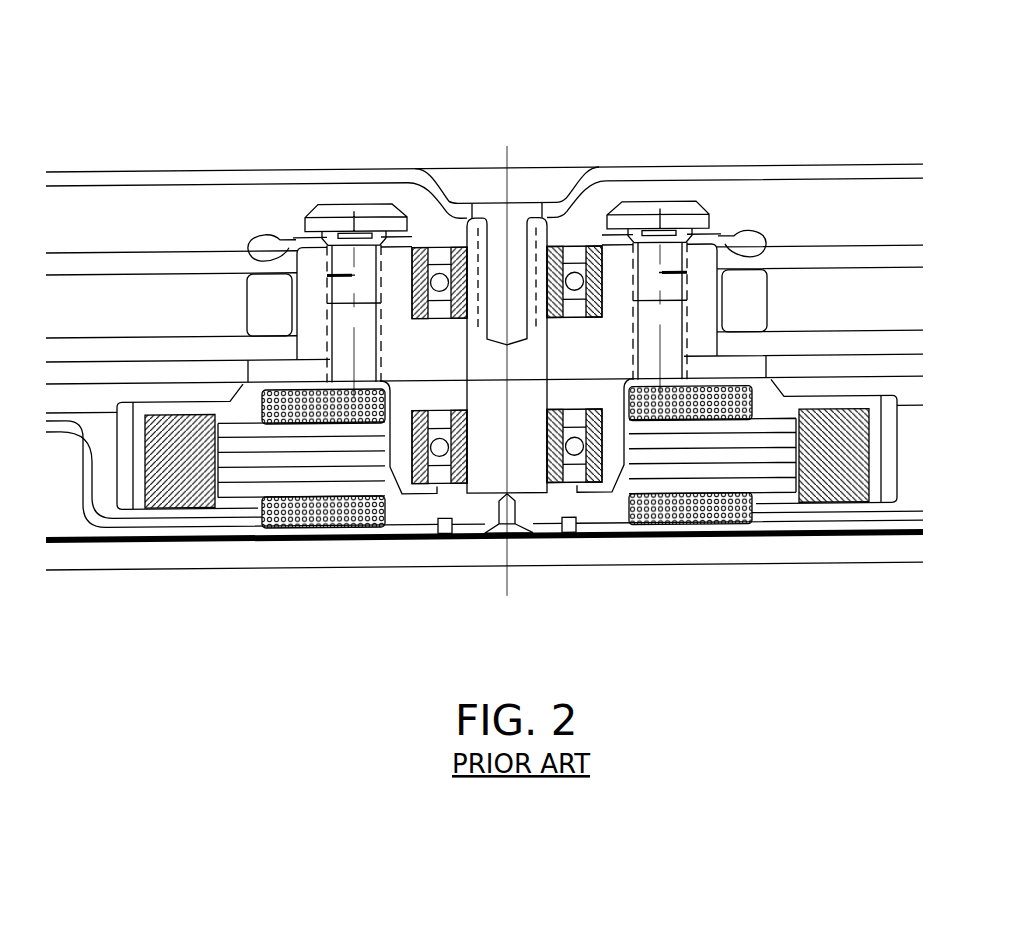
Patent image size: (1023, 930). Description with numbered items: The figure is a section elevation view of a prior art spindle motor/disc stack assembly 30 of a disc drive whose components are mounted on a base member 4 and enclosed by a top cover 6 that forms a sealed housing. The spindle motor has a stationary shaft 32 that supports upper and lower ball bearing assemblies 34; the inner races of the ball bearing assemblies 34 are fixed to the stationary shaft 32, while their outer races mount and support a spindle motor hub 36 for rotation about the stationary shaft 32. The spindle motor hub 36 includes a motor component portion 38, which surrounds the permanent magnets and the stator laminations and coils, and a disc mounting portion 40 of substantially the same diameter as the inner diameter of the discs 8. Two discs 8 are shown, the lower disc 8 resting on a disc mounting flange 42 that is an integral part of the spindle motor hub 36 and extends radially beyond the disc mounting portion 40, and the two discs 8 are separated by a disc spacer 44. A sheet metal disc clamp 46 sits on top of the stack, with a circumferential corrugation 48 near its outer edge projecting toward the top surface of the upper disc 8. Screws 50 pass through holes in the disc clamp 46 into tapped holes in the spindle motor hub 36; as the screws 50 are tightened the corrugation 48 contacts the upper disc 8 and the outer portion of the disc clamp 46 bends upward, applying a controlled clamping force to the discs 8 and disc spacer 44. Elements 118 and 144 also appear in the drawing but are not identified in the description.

The spindle motor/disc stack assembly 30 is at (168, 76).
The base member 4 is at (117, 534).
The top cover 6 is at (699, 173).
The disc 8 is at (812, 262).
The disc spacer 44 is at (748, 313).
The stationary shaft 32 is at (477, 516).
The ball bearing assembly 34 is at (418, 400).
The spindle motor hub 36 is at (619, 288).
The motor component portion 38 is at (127, 421).
The disc mounting portion 40 is at (700, 293).
The disc mounting flange 42 is at (755, 378).
The disc clamp 46 is at (294, 238).
The circumferential corrugation 48 is at (265, 242).
The screw 50 is at (383, 215).
The connector 118 is at (592, 516).
The magnet 144 is at (175, 426).